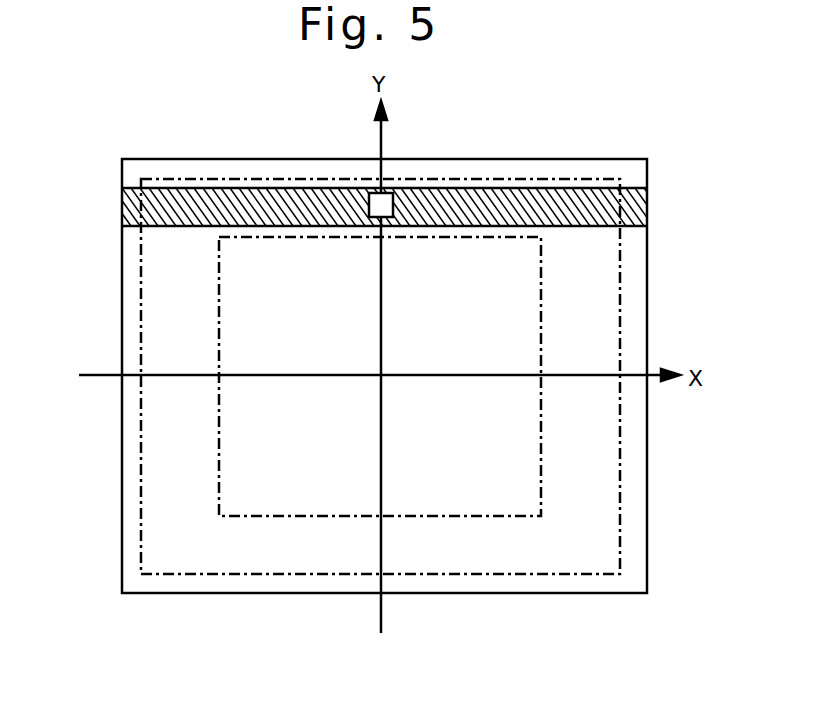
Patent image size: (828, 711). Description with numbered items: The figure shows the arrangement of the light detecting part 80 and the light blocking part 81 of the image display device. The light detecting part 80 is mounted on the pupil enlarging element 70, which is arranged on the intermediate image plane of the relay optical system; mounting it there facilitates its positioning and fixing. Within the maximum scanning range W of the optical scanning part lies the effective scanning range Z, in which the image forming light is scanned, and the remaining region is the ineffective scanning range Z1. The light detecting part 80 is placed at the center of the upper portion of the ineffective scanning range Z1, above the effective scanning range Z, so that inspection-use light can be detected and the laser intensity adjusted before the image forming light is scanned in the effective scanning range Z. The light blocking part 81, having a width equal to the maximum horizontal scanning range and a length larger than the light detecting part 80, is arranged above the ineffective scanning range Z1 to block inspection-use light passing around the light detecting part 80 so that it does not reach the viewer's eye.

The pupil enlarging element 70 is at (538, 160).
The light detecting part 80 is at (387, 193).
The light blocking part 81 is at (205, 197).
The maximum scanning range W is at (140, 520).
The effective scanning range Z is at (218, 292).
The ineffective scanning range Z1 is at (328, 403).